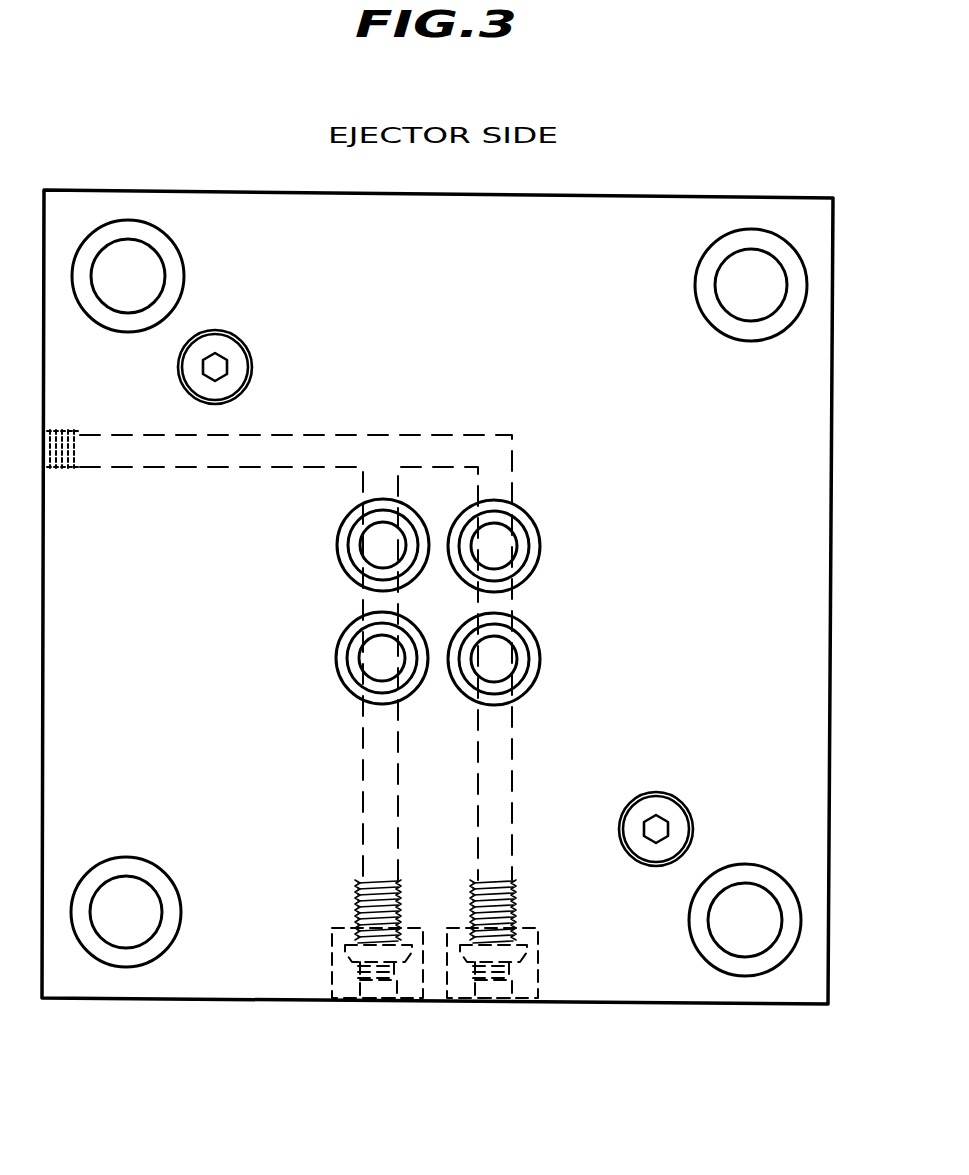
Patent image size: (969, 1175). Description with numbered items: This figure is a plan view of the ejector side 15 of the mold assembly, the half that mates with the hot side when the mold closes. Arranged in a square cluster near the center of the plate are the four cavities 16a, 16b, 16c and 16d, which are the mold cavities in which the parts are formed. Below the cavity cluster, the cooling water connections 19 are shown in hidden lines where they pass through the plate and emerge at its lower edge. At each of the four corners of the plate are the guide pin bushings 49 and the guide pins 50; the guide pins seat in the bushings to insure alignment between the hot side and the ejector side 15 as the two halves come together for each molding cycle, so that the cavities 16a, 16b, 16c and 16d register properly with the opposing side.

The ejector side 15 is at (715, 198).
The cavity 16a is at (342, 543).
The cavity 16b is at (532, 553).
The cavity 16c is at (342, 673).
The cavity 16d is at (532, 670).
The cooling water connections 19 is at (492, 1003).
The guide pin bushings 49 is at (155, 235).
The guide pins 50 is at (115, 253).